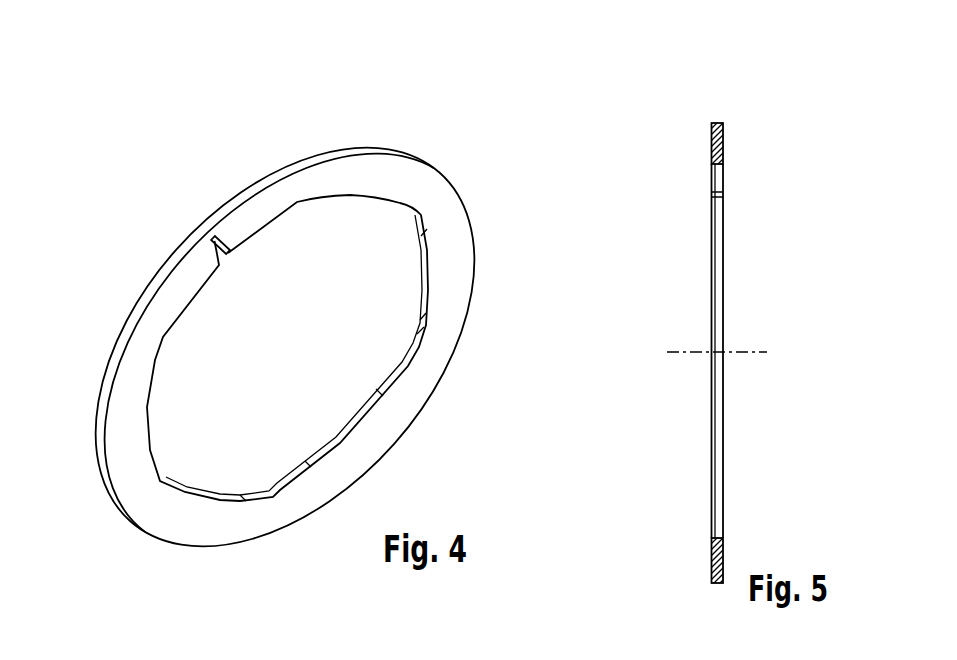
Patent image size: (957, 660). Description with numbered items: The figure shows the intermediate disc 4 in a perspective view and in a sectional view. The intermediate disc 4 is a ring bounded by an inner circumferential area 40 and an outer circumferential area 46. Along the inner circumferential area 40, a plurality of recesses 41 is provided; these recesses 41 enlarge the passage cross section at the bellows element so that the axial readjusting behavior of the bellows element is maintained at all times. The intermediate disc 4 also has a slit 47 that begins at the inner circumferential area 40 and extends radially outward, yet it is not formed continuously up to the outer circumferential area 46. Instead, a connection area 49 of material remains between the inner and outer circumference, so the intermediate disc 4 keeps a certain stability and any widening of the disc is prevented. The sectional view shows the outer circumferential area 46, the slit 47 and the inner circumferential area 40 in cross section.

In FIG. 4, the intermediate disc 4 is at (141, 166).
In FIG. 5, the intermediate disc 4 is at (689, 122).
In FIG. 4, the inner circumferential area 40 is at (254, 245).
In FIG. 5, the inner circumferential area 40 is at (719, 538).
In FIG. 4, the recesses 41 is at (298, 206).
In FIG. 4, the outer circumferential area 46 is at (363, 147).
In FIG. 5, the outer circumferential area 46 is at (719, 122).
In FIG. 4, the slit 47 is at (211, 250).
In FIG. 5, the slit 47 is at (721, 196).
In FIG. 4, the connection area 49 is at (212, 238).